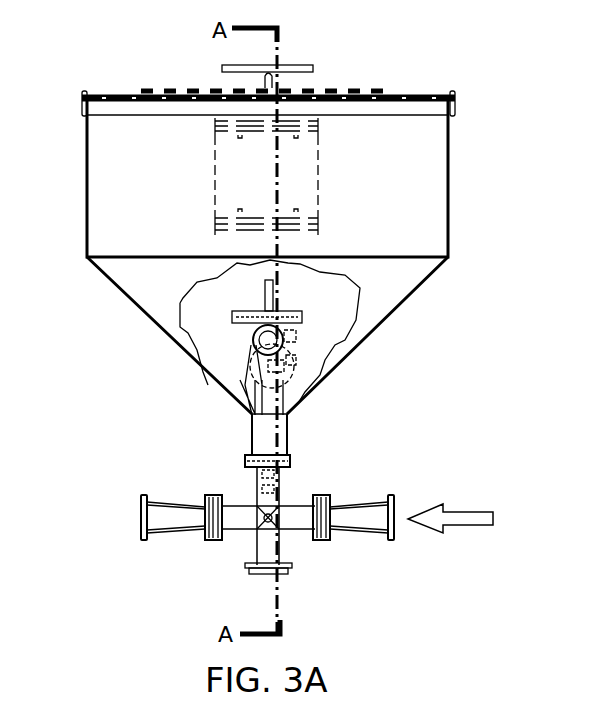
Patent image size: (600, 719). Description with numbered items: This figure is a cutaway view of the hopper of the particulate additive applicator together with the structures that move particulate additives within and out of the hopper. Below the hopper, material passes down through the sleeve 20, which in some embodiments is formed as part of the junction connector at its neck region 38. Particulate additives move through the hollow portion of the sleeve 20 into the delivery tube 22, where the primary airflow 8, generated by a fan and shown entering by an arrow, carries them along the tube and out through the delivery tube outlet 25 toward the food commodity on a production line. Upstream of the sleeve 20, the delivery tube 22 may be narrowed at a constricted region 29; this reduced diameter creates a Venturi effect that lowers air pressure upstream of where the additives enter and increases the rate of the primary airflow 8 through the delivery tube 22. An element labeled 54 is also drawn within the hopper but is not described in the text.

The primary airflow 8 is at (460, 518).
The sleeve 20 is at (252, 438).
The delivery tube 22 is at (243, 515).
The delivery tube outlet 25 is at (130, 521).
The constricted region 29 is at (298, 517).
The neck region 38 is at (300, 450).
The bag / liner 54 is at (218, 337).